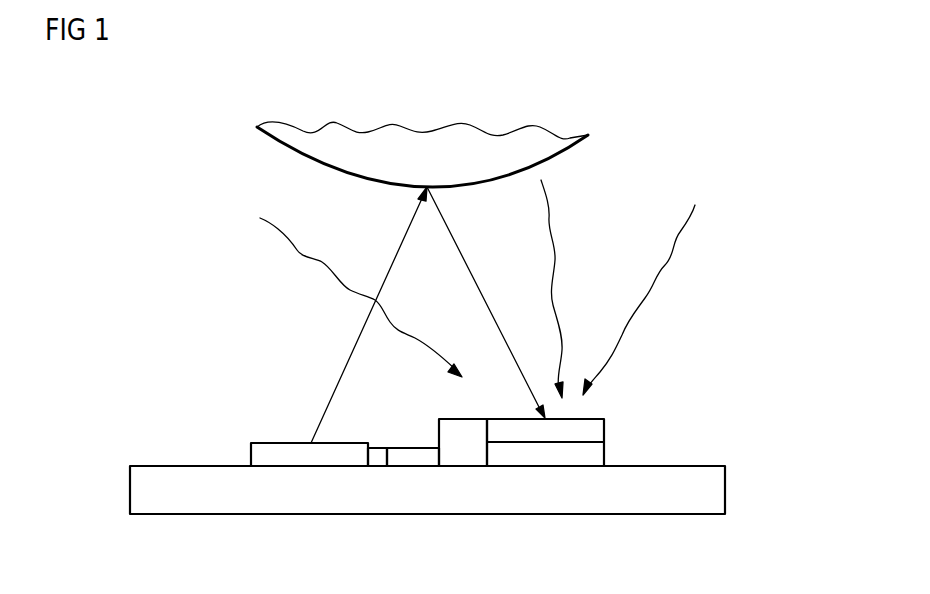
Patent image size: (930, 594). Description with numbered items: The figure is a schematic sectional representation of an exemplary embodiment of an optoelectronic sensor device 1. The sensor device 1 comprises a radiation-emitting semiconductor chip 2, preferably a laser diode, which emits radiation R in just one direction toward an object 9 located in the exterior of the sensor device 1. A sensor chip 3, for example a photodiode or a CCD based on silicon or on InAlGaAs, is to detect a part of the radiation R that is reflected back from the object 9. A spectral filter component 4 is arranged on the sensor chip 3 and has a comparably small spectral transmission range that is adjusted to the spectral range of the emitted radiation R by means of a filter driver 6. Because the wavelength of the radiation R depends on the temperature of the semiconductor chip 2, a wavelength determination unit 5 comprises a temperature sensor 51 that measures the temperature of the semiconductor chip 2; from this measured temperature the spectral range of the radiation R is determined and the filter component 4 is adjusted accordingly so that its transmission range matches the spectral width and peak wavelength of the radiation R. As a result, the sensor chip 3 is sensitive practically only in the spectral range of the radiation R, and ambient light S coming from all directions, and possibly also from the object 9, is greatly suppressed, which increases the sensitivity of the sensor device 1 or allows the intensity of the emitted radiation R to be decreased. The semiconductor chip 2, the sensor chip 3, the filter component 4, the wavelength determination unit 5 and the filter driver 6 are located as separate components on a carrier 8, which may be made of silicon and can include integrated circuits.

The optoelectronic sensor device 1 is at (728, 106).
The radiation-emitting semiconductor chip 2 is at (251, 450).
The sensor chip 3 is at (605, 453).
The spectral filter component 4 is at (605, 425).
The wavelength determination unit 5 is at (412, 449).
The temperature sensor 51 is at (378, 448).
The filter driver 6 is at (472, 419).
The carrier 8 is at (726, 490).
The object 9 is at (420, 144).
The radiation R is at (370, 313).
The ambient light S is at (298, 255).